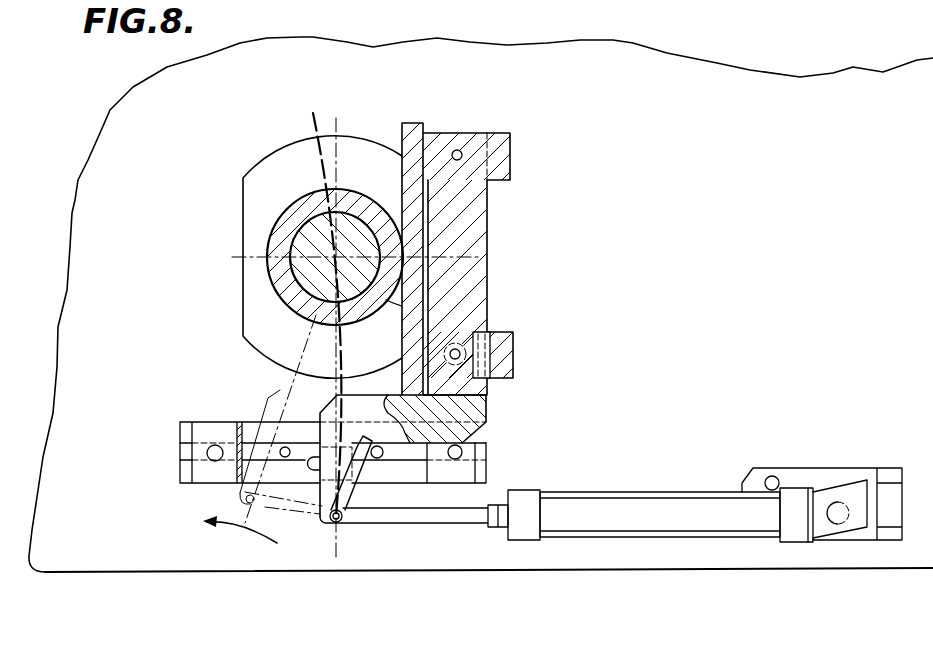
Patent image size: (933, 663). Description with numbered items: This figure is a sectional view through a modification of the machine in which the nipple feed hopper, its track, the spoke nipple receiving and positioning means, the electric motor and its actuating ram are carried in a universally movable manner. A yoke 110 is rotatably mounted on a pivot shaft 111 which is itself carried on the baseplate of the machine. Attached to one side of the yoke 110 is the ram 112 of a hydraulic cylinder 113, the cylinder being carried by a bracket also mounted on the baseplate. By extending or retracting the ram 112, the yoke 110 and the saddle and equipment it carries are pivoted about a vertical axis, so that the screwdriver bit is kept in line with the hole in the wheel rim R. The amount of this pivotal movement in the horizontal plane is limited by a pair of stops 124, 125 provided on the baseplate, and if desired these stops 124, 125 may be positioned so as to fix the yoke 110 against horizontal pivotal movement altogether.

The yoke 110 is at (402, 186).
The pivot shaft 111 is at (302, 200).
The ram 112 is at (410, 518).
The hydraulic cylinder 113 is at (682, 503).
The stop 124 is at (198, 478).
The stop 125 is at (486, 471).
The wheel rim R is at (312, 120).